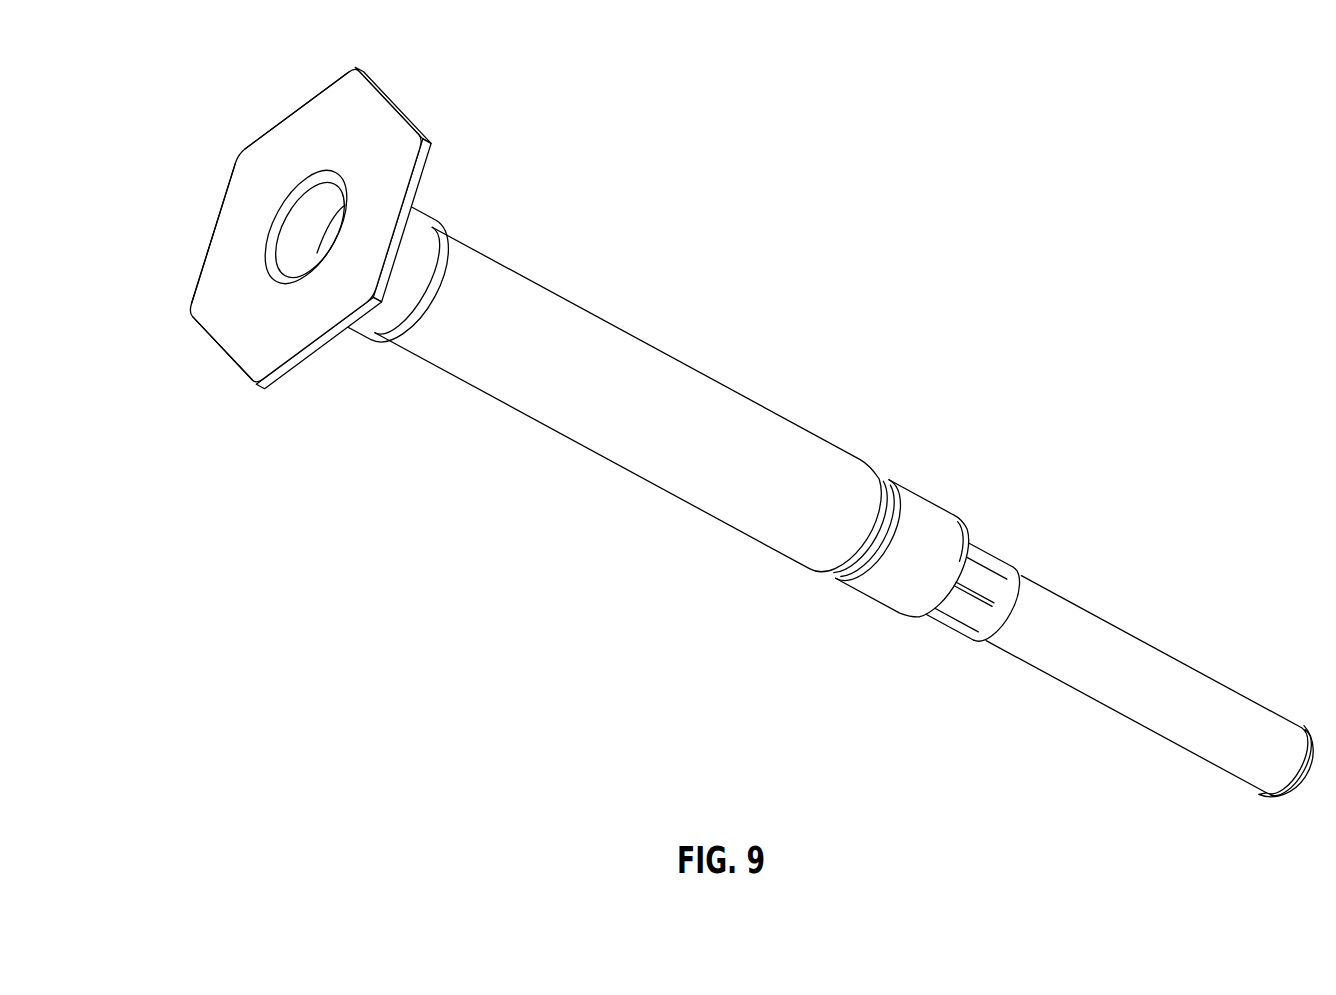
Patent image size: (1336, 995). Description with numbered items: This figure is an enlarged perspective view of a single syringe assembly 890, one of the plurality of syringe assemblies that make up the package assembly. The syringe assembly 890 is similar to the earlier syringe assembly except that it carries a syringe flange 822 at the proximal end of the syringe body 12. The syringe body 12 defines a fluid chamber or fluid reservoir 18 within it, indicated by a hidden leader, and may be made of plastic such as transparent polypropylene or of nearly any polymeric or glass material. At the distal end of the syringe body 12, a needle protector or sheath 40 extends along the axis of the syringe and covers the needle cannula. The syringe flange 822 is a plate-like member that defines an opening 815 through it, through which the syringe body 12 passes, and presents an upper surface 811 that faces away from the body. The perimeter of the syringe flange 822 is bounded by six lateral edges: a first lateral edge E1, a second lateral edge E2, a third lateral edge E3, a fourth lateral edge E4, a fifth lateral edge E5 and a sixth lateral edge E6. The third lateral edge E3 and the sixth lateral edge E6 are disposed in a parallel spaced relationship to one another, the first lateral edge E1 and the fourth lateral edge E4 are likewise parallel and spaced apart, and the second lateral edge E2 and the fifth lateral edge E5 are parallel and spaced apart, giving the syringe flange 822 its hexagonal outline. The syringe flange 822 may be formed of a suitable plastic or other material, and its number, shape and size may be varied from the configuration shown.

The syringe assembly 890 is at (707, 415).
The syringe flange 822 is at (305, 243).
The upper surface 811 is at (253, 362).
The opening 815 is at (272, 245).
The syringe body 12 is at (636, 347).
The fluid reservoir 18 is at (734, 424).
The needle protector 40 is at (1143, 647).
The first lateral edge E1 is at (314, 357).
The second lateral edge E2 is at (214, 357).
The third lateral edge E3 is at (211, 209).
The fourth lateral edge E4 is at (294, 101).
The fifth lateral edge E5 is at (407, 102).
The sixth lateral edge E6 is at (420, 188).